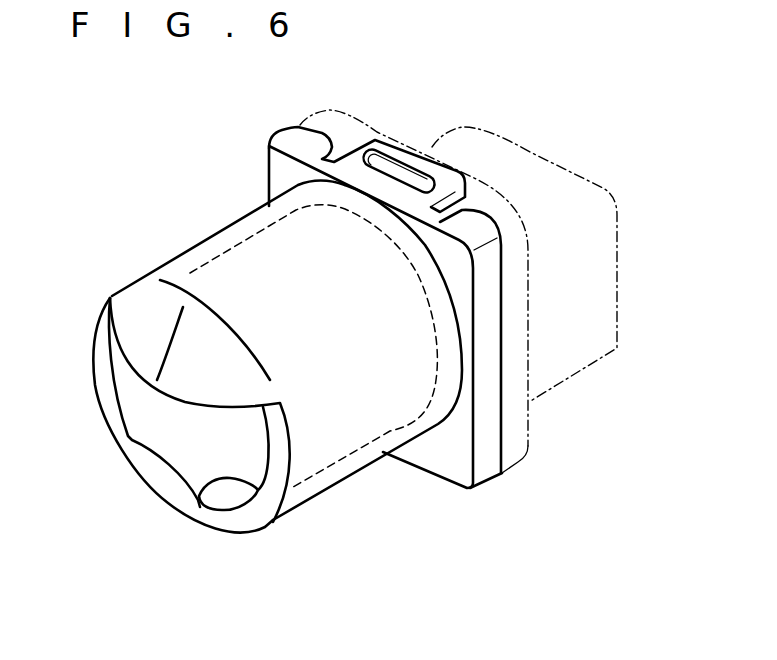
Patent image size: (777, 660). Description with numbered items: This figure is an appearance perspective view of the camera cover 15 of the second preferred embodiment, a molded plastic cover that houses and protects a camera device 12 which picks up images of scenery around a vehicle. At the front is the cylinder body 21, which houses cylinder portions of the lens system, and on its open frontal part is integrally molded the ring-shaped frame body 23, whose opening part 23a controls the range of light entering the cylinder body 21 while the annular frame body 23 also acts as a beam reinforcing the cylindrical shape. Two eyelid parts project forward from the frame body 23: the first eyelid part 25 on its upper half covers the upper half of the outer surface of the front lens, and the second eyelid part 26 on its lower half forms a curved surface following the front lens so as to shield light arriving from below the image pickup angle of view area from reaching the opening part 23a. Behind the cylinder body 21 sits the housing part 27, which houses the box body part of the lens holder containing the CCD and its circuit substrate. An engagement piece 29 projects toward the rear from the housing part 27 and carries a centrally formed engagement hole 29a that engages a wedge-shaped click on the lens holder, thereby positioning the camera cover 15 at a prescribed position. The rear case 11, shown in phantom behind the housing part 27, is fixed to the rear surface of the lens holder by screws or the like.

The rear case 11 is at (617, 280).
The camera device 12 is at (360, 447).
The camera cover 15 is at (230, 216).
The cylinder body 21 is at (197, 257).
The frame body 23 is at (224, 523).
The opening part 23a is at (262, 489).
The first eyelid part 25 is at (135, 300).
The second eyelid part 26 is at (147, 467).
The housing part 27 is at (487, 462).
The engagement piece 29 is at (380, 147).
The engagement hole 29a is at (402, 178).